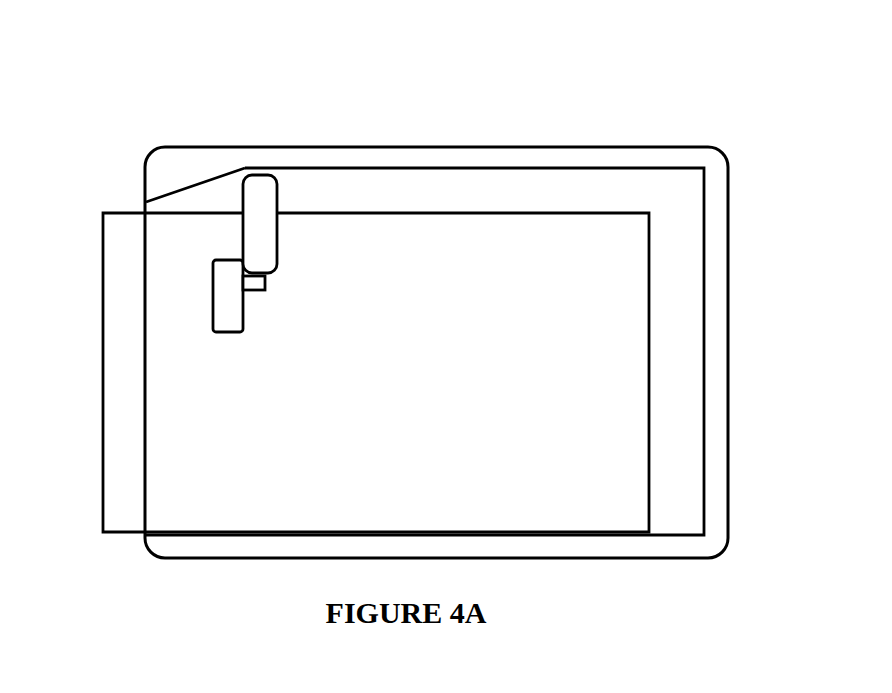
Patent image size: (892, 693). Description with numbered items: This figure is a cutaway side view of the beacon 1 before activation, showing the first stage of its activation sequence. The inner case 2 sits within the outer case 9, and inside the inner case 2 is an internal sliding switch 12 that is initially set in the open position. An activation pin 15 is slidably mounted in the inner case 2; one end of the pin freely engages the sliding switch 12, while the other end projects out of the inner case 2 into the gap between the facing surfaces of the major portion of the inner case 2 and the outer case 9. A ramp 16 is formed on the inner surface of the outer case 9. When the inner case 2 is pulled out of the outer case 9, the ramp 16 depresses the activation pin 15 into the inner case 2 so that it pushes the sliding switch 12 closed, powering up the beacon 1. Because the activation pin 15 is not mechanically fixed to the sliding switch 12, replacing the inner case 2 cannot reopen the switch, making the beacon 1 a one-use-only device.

The beacon 1 is at (755, 100).
The inner case 2 is at (103, 443).
The outer case 9 is at (729, 363).
The sliding switch 12 is at (243, 325).
The activation pin 15 is at (277, 242).
The ramp 16 is at (198, 185).